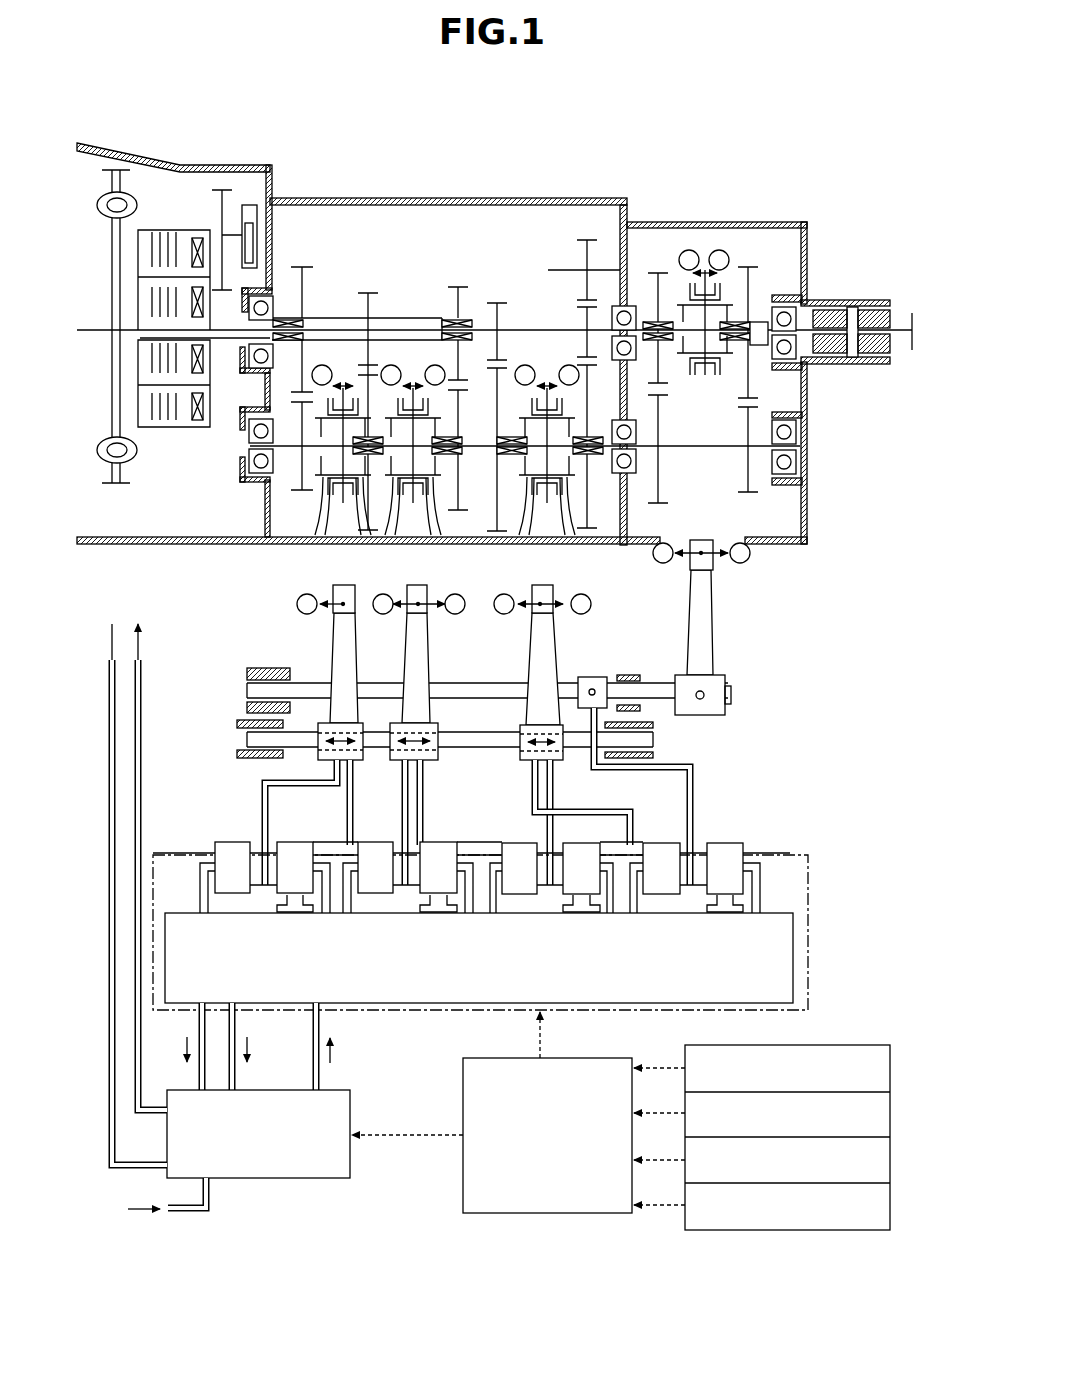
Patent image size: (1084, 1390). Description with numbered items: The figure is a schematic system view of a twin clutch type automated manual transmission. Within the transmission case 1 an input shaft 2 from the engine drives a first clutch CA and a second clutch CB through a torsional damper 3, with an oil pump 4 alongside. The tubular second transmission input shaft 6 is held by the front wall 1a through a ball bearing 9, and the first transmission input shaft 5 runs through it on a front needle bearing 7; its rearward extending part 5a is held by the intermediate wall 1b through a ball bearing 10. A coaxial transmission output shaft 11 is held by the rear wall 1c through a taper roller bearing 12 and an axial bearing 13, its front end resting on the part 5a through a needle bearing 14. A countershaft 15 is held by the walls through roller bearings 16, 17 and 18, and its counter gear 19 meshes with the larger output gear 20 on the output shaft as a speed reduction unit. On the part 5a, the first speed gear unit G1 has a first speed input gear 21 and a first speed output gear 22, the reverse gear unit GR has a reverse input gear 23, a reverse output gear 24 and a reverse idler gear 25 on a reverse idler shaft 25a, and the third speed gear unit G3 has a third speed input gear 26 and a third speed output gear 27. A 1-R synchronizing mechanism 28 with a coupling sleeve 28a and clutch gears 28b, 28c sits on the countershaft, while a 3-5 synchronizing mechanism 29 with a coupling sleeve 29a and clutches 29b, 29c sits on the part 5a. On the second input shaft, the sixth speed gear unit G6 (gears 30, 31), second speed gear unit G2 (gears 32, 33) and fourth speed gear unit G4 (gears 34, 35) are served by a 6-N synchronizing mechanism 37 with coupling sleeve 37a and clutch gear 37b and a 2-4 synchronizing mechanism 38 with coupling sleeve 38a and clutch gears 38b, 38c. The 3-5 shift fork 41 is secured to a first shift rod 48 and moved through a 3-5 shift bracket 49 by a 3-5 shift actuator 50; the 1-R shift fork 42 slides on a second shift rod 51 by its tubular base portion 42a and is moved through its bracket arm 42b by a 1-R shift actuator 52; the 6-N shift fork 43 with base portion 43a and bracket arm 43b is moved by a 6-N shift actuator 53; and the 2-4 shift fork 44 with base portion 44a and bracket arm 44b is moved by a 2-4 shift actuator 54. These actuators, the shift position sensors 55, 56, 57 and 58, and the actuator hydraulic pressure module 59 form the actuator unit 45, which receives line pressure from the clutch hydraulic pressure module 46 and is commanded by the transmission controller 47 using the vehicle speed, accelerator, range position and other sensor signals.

The transmission case 1 is at (586, 194).
The front wall 1a is at (270, 230).
The intermediate wall 1b is at (624, 235).
The rear wall 1c is at (808, 240).
The input shaft 2 is at (92, 328).
The torsional damper 3 is at (115, 192).
The oil pump 4 is at (250, 205).
The first transmission input shaft 5 is at (355, 328).
The rearward extending part 5a is at (520, 325).
The second transmission input shaft 6 is at (403, 316).
The front needle bearing 7 is at (302, 265).
The ball bearing 9 is at (280, 262).
The ball bearing 10 is at (633, 302).
The transmission output shaft 11 is at (905, 325).
The taper roller bearing 12 is at (785, 300).
The axial bearing 13 is at (833, 305).
The needle bearing 14 is at (800, 368).
The countershaft 15 is at (700, 452).
The roller bearing 16 is at (255, 462).
The roller bearing 17 is at (622, 474).
The roller bearing 18 is at (798, 462).
The counter gear 19 is at (760, 493).
The output gear 20 is at (748, 265).
The first speed input gear 21 is at (495, 300).
The first speed output gear 22 is at (497, 534).
The reverse input gear 23 is at (580, 325).
The reverse output gear 24 is at (627, 546).
The reverse idler gear 25 is at (582, 255).
The reverse idler shaft 25a is at (584, 302).
The third speed input gear 26 is at (651, 276).
The third speed output gear 27 is at (656, 548).
The 1-R synchronizing mechanism 28 is at (552, 505).
The coupling sleeve 28a is at (548, 497).
The clutch gear 28b is at (530, 505).
The clutch gear 28c is at (588, 530).
The 3-5 synchronizing mechanism 29 is at (706, 372).
The coupling sleeve 29a is at (770, 345).
The clutch 29b is at (694, 380).
The clutch 29c is at (768, 345).
The sixth speed input gear 30 is at (362, 292).
The sixth speed output gear 31 is at (300, 490).
The second speed input gear 32 is at (362, 290).
The second speed output gear 33 is at (357, 510).
The fourth speed input gear 34 is at (450, 318).
The fourth speed output gear 35 is at (470, 510).
The 6-N synchronizing mechanism 37 is at (340, 505).
The coupling sleeve 37a is at (333, 495).
The clutch gear 37b is at (322, 485).
The 2-4 synchronizing mechanism 38 is at (413, 505).
The coupling sleeve 38a is at (418, 497).
The clutch gear 38b is at (392, 503).
The clutch gear 38c is at (435, 505).
The 3-5 shift fork 41 is at (712, 613).
The 1-R shift fork 42 is at (548, 652).
The tubular base portion 42a is at (560, 760).
The bracket arm 42b is at (612, 812).
The 6-N shift fork 43 is at (342, 640).
The tubular base portion 43a is at (358, 752).
The bracket arm 43b is at (352, 796).
The 2-4 shift fork 44 is at (417, 641).
The tubular base portion 44a is at (435, 758).
The bracket arm 44b is at (426, 793).
The actuator unit 45 is at (784, 856).
The clutch hydraulic pressure module 46 is at (263, 1180).
The transmission controller 47 is at (538, 1214).
The first shift rod 48 is at (486, 682).
The 3-5 shift bracket 49 is at (670, 767).
The 3-5 shift actuator 50 is at (740, 843).
The second shift rod 51 is at (470, 735).
The 1-R shift actuator 52 is at (598, 843).
The 6-N shift actuator 53 is at (300, 842).
The 2-4 shift actuator 54 is at (458, 843).
The 3-5 shift position sensor 55 is at (727, 915).
The 1-R shift position sensor 56 is at (580, 915).
The 6-N shift position sensor 57 is at (296, 915).
The 2-4 shift position sensor 58 is at (440, 915).
The actuator hydraulic pressure module 59 is at (470, 1012).
The first clutch CA is at (172, 228).
The second clutch CB is at (158, 362).
The first speed gear unit G1 is at (502, 298).
The second speed gear unit G2 is at (374, 286).
The third speed gear unit G3 is at (664, 266).
The fourth speed gear unit G4 is at (462, 282).
The sixth speed gear unit G6 is at (306, 255).
The reverse gear unit GR is at (582, 236).